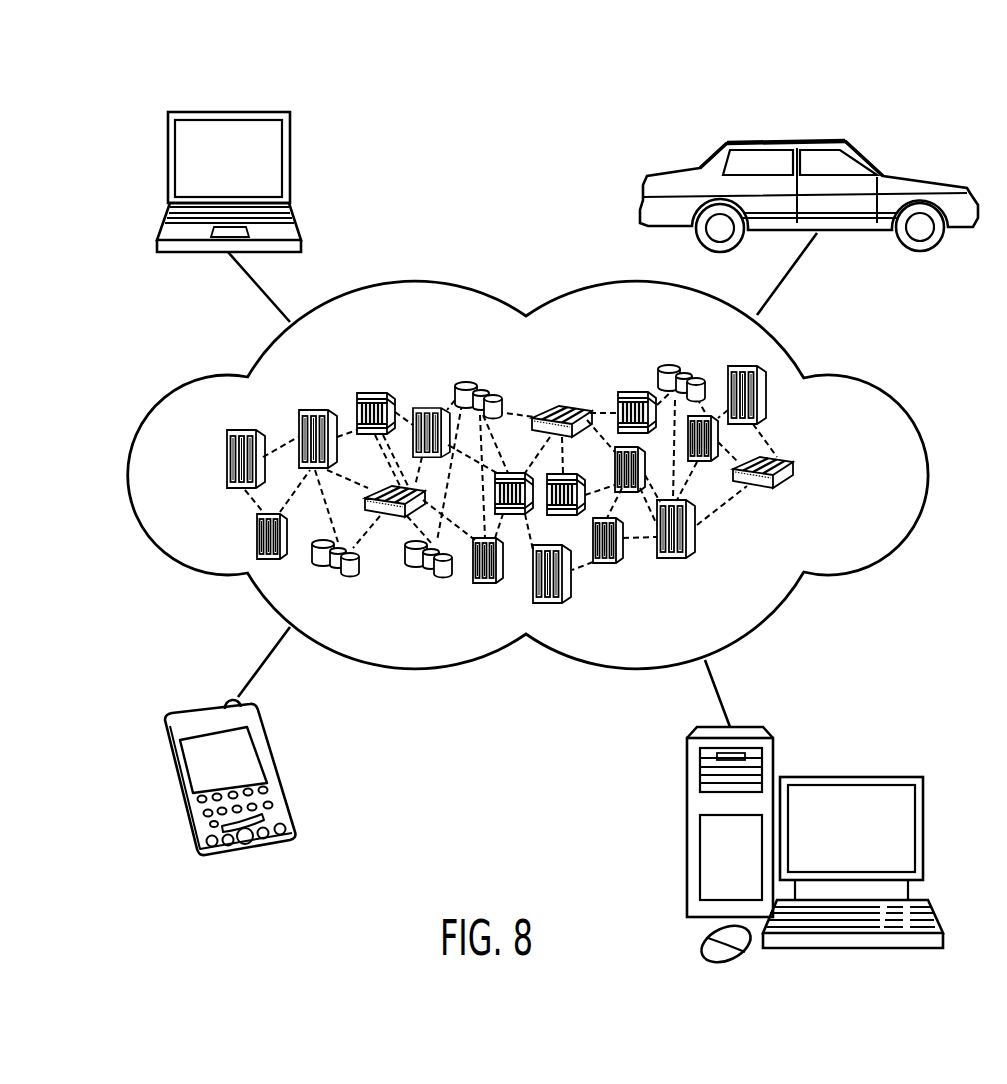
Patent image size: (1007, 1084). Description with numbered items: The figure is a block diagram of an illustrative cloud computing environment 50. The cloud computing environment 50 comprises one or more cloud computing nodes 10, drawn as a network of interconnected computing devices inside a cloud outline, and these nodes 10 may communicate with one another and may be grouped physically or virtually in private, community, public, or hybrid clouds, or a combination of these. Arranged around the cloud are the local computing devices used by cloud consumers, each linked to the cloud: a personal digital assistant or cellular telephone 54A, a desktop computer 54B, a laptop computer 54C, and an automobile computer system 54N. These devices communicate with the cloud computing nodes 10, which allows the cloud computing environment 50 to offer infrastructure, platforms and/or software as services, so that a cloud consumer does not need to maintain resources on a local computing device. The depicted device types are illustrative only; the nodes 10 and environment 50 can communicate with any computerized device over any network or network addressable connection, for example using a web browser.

The cloud computing node 10 is at (798, 473).
The cloud computing environment 50 is at (528, 475).
The personal digital assistant or cellular telephone 54A is at (208, 712).
The desktop computer 54B is at (852, 775).
The laptop computer 54C is at (228, 112).
The automobile computer system 54N is at (790, 137).